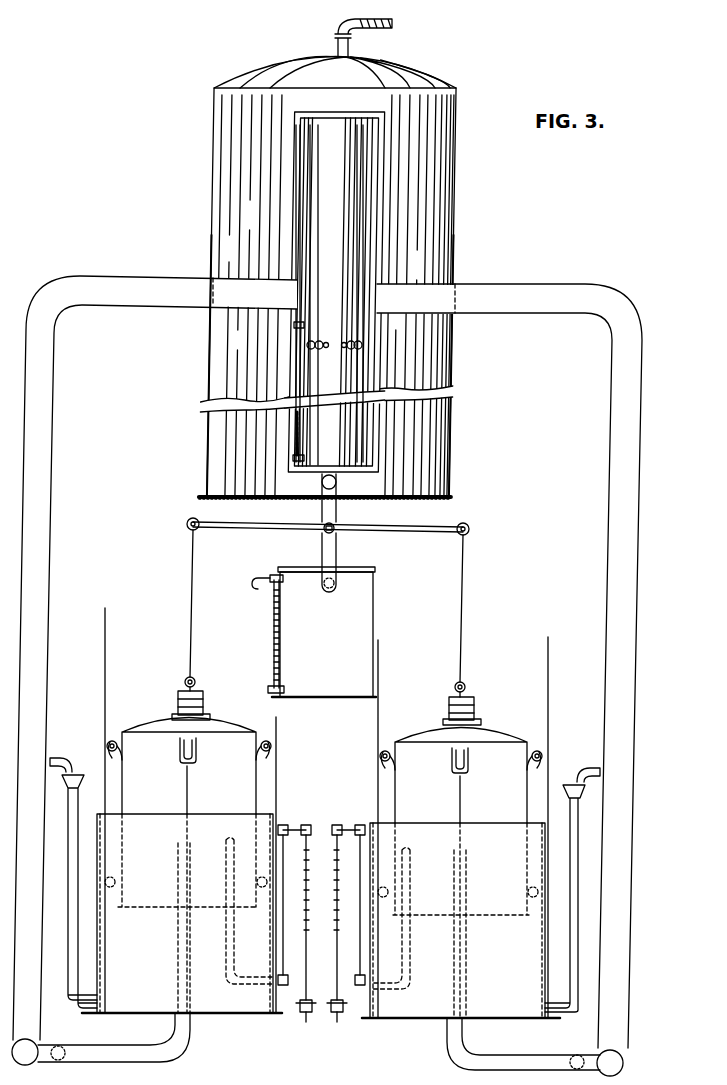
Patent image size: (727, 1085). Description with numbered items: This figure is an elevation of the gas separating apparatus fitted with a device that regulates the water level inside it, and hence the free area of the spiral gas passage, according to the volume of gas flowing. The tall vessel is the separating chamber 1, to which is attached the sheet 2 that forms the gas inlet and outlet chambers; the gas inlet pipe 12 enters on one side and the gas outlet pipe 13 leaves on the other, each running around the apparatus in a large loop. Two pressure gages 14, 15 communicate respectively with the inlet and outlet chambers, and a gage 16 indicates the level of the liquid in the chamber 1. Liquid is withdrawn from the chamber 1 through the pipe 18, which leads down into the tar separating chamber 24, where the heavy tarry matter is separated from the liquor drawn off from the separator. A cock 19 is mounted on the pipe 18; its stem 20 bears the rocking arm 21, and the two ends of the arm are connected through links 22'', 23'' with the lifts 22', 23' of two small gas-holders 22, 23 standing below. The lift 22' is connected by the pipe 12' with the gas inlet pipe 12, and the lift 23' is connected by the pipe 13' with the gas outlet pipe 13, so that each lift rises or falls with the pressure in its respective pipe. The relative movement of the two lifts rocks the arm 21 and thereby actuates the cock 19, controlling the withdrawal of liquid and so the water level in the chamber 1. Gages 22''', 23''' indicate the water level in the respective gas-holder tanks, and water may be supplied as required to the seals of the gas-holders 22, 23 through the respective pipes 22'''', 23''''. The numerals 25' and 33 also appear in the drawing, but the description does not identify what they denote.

The separating chamber 1 is at (457, 124).
The sheet 2 is at (336, 292).
The gas inlet pipe 12 is at (509, 666).
The pipe 12' is at (535, 1047).
The gas outlet pipe 13 is at (155, 658).
The pipe 13' is at (101, 1039).
The pressure gage 14 is at (360, 365).
The pressure gage 15 is at (300, 385).
The gage 16 is at (300, 344).
The pipe 18 is at (325, 549).
The cock 19 is at (328, 526).
The stem 20 is at (333, 534).
The rocking arm 21 is at (398, 524).
The gas-holder 22 is at (461, 920).
The lift 22' is at (461, 752).
The link 22'' is at (481, 608).
The gage 22''' is at (581, 890).
The pipe 22'''' is at (357, 939).
The gas-holder 23 is at (182, 913).
The lift 23' is at (189, 745).
The link 23'' is at (211, 603).
The gage 23''' is at (70, 883).
The pipe 23'''' is at (289, 937).
The tar separating chamber 24 is at (324, 632).
The gauge glass 25' is at (261, 620).
The outlet pipe 33 is at (393, 24).